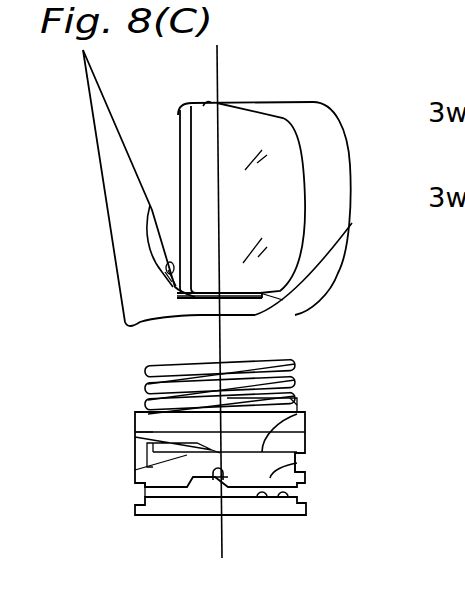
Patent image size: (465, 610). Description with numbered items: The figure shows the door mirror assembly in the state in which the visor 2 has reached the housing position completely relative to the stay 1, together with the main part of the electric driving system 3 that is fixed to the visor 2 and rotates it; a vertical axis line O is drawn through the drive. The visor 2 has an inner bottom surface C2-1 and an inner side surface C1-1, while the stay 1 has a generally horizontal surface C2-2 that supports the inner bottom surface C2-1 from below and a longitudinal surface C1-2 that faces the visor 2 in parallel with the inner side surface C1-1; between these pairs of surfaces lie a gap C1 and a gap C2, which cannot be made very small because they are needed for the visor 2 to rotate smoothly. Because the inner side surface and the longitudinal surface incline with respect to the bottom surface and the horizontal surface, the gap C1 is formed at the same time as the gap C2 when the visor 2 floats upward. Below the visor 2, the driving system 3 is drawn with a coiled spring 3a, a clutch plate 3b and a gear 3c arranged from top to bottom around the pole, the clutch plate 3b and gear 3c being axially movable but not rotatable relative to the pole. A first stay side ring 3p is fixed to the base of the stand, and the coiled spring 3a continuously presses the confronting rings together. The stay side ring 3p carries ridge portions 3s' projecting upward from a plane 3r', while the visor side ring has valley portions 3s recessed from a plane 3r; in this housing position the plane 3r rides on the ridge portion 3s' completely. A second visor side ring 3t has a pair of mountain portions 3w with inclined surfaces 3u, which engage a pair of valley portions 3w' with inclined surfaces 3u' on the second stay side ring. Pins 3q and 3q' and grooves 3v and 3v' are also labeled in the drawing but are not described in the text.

The stay 1 is at (128, 207).
The visor 2 is at (280, 104).
The optical axis O is at (219, 70).
The gap C1 is at (170, 272).
The inner side surface C1-1 is at (158, 198).
The longitudinal surface C1-2 is at (167, 276).
The gap C2 is at (200, 300).
The inner bottom surface C2-1 is at (352, 223).
The generally horizontal surface C2-2 is at (241, 322).
The electric driving system 3 is at (405, 365).
The coiled spring 3a is at (143, 372).
The clutch plate 3b is at (135, 412).
The gear 3c is at (147, 443).
The first stay side ring 3p is at (160, 508).
The pin 3q is at (211, 530).
The pin 3q' is at (284, 540).
The plane 3r is at (324, 459).
The plane 3r' is at (310, 510).
The valley portion 3s is at (200, 513).
The ridge portion 3s' is at (251, 520).
The second visor side ring 3t is at (140, 468).
The inclined surface 3u is at (82, 508).
The inclined surface 3u' is at (257, 393).
The groove 3v is at (104, 522).
The groove 3v' is at (345, 390).
The mountain portion 3w is at (86, 459).
The valley portion 3w' is at (89, 419).